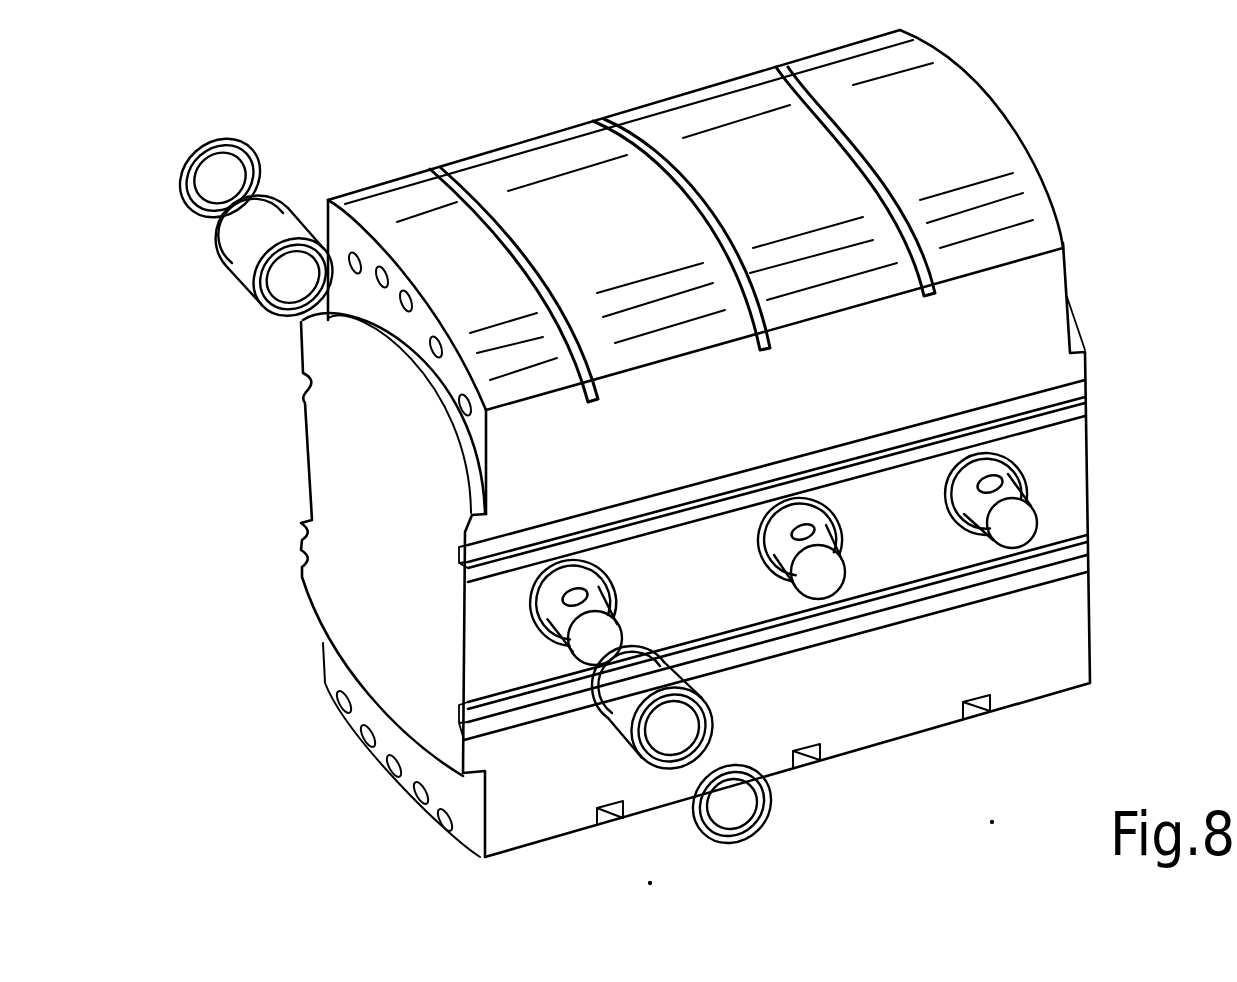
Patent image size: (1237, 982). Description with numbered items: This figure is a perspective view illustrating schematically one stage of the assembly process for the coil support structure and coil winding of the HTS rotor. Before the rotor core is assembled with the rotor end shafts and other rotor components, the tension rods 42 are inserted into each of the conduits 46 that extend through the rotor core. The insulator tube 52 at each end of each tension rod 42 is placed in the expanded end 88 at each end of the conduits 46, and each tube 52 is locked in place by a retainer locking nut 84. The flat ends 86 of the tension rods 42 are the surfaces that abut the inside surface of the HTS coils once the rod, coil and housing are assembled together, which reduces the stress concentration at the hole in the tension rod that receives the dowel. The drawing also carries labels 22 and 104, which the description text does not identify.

The housing cover 22 is at (977, 136).
The tension rods 42 is at (775, 570).
The conduits 46 is at (505, 605).
The insulator tube 52 is at (240, 251).
The retainer locking nut 84 is at (238, 145).
The flat ends 86 is at (1000, 512).
The expanded end 88 is at (598, 598).
The mounting flange 104 is at (982, 487).